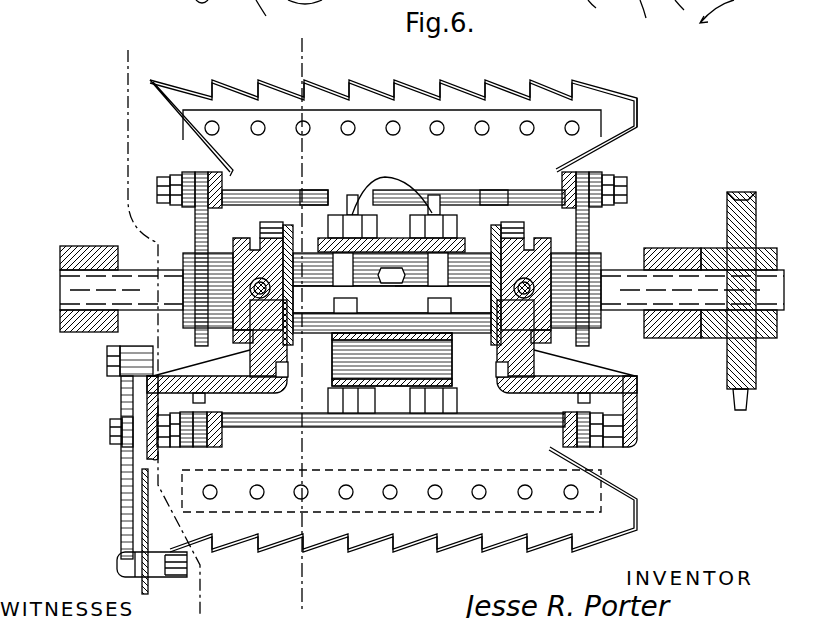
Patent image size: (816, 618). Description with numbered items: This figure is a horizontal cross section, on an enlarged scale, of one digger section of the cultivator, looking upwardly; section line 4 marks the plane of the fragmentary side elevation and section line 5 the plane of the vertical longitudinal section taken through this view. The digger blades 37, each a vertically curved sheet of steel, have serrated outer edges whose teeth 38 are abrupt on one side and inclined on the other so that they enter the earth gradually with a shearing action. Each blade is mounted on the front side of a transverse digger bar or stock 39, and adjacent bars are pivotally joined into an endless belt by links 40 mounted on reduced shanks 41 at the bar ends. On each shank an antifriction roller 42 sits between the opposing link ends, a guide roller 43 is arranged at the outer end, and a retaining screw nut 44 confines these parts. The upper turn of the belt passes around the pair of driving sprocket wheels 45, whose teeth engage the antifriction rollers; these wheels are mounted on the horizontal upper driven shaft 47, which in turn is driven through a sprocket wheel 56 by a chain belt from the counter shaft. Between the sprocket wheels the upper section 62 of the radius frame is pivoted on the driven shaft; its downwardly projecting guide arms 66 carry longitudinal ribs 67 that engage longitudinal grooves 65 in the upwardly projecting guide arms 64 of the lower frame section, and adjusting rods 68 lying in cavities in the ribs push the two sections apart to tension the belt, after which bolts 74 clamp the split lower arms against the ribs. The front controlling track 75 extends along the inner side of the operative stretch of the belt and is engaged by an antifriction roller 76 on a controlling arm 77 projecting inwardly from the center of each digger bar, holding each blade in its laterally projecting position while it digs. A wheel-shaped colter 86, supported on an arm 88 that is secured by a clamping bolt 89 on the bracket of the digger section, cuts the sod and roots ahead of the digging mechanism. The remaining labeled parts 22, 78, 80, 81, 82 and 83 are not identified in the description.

The section line 4— 4 is at (100, 57).
The section line 5— 5 is at (283, 579).
The blade assembly 22 is at (652, 120).
The digger blade 37 is at (391, 315).
The tooth 38 is at (365, 543).
The digger bar 39 is at (485, 427).
The link 40 is at (570, 445).
The reduced shank 41 is at (583, 432).
The antifriction roller 42 is at (205, 447).
The guide roller 43 is at (636, 450).
The retaining screw nut 44 is at (637, 429).
The upper driving sprocket wheel 45 is at (588, 239).
The upper driven shaft 47 is at (70, 288).
The sprocket wheel 56 is at (747, 192).
The upper section of radius frame 62 is at (392, 293).
The upwardly projecting guide arm 64 is at (510, 205).
The longitudinal groove 65 is at (280, 242).
The downwardly projecting guide arm 66 is at (587, 351).
The longitudinal rib 67 is at (542, 250).
The adjusting rod 68 is at (536, 294).
The bolt 74 is at (503, 378).
The front controlling track 75 is at (408, 379).
The antifriction roller 76 is at (437, 402).
The controlling arm 77 is at (360, 453).
The cross bar 78 is at (453, 248).
The bolt 80 is at (380, 268).
The pin 81 is at (400, 289).
The bracket end 82 is at (629, 462).
The bracket 83 is at (573, 383).
The colter 86 is at (142, 588).
The colter arm 88 is at (121, 528).
The clamping bolt 89 is at (110, 430).